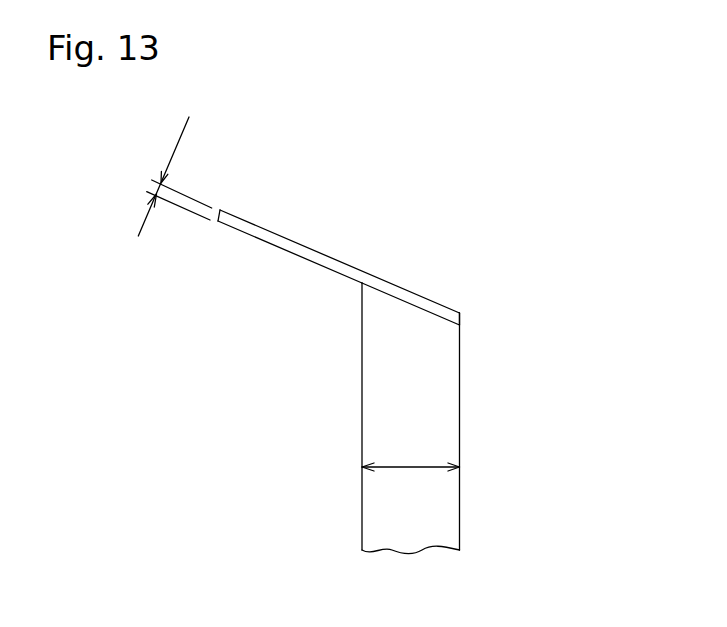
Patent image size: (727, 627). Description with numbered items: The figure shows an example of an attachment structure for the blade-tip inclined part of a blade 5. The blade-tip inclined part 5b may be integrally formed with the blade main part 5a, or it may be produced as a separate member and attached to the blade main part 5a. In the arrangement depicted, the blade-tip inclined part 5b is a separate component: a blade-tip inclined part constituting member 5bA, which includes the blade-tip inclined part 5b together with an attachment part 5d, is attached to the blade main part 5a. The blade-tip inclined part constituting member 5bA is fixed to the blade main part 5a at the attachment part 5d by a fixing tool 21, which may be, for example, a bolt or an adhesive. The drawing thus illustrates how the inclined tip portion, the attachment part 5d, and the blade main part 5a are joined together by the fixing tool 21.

The steel member 5 is at (355, 334).
The blade main part 5a is at (373, 403).
The blade-tip inclined part 5b is at (384, 240).
The blade-tip inclined part constituting member 5bA is at (371, 268).
The attachment part 5d is at (443, 308).
The fixing tool 21 is at (386, 303).